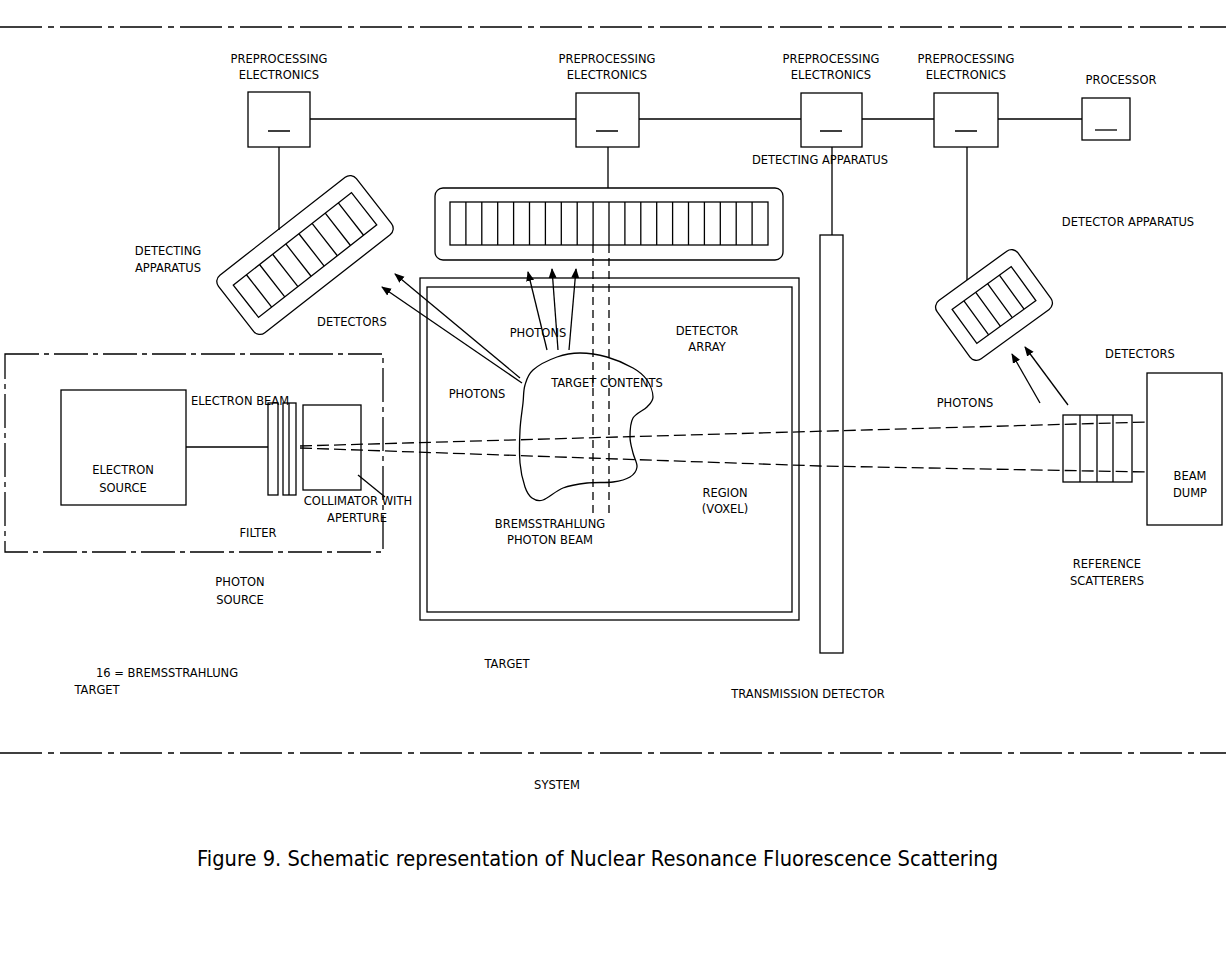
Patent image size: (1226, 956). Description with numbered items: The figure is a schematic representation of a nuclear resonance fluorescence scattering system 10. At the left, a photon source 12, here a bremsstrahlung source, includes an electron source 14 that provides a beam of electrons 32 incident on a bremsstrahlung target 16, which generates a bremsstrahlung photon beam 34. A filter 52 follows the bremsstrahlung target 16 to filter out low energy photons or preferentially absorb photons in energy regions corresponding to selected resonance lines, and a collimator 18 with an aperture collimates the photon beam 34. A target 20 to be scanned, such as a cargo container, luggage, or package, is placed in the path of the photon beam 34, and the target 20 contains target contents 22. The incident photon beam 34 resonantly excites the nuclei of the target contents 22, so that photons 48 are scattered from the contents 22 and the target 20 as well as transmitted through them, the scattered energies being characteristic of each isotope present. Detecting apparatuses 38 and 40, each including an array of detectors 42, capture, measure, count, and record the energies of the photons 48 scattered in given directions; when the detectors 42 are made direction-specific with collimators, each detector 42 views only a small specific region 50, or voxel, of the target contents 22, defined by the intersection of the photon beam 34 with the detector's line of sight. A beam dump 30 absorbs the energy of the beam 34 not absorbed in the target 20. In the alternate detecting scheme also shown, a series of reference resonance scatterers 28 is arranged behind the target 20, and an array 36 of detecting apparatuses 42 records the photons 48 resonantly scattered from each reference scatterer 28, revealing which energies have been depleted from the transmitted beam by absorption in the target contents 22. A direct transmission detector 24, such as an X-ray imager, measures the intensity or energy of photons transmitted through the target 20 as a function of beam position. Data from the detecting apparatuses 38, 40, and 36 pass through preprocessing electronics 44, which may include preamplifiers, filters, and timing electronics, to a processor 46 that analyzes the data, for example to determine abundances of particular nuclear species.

The system 10 is at (460, 758).
The photon source 12 is at (143, 556).
The electron source 14 is at (111, 459).
The bremsstrahlung target 16 is at (268, 458).
The collimator 18 is at (321, 485).
The target 20 is at (488, 618).
The target contents 22 is at (548, 430).
The direct transmission detector 24 is at (838, 653).
The reference resonance scatterers 28 is at (1120, 477).
The beam dump 30 is at (1175, 462).
The beam of electrons 32 is at (213, 445).
The bremsstrahlung photon beam 34 is at (468, 455).
The array of detecting apparatuses 36 is at (985, 262).
The detecting apparatus 38 is at (663, 187).
The detecting apparatus 40 is at (240, 255).
The detectors 42 is at (330, 248).
The preprocessing electronics 44 is at (665, 186).
The processor 46 is at (1106, 119).
The photons 48 is at (532, 312).
The region (voxel) 50 is at (600, 448).
The filter 52 is at (285, 495).